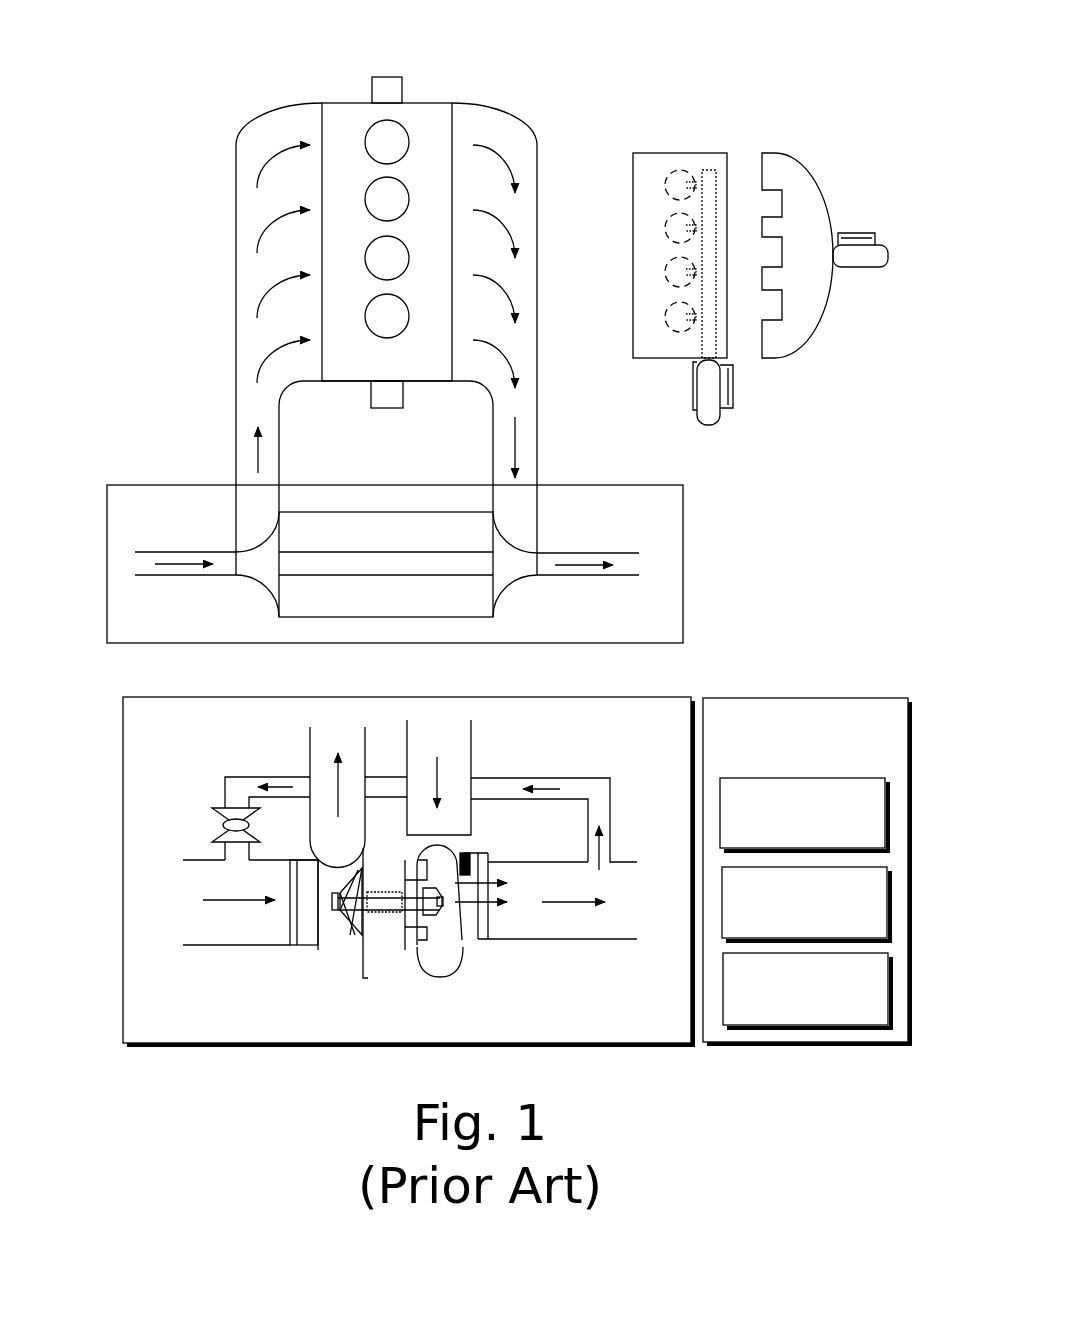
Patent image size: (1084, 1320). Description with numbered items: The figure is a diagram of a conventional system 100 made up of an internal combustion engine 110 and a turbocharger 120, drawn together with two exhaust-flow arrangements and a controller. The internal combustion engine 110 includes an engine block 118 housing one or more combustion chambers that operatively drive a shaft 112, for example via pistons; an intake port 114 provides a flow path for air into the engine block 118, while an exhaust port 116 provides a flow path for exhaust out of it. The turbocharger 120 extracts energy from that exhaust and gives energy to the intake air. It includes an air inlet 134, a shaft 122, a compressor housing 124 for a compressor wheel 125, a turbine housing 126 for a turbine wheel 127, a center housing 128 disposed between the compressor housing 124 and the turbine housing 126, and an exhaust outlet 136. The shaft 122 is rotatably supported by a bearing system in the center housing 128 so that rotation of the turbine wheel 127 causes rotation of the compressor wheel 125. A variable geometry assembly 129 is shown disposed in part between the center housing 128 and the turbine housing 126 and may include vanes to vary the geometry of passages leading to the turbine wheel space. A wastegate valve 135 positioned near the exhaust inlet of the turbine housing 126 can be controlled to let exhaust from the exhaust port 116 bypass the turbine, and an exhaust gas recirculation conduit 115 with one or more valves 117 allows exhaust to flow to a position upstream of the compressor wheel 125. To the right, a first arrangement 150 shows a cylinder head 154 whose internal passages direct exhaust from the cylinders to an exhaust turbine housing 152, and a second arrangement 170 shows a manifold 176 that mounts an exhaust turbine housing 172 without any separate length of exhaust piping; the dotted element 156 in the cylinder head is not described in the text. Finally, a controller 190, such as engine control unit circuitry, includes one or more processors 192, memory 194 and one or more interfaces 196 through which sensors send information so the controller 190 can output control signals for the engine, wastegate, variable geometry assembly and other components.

The system 100 is at (523, 60).
The internal combustion engine 110 is at (355, 103).
The shaft 112 is at (388, 77).
The intake port 114 is at (253, 120).
The exhaust gas recirculation conduit 115 is at (237, 777).
The exhaust port 116 is at (518, 118).
The valve 117 is at (220, 808).
The engine block 118 is at (388, 381).
The turbocharger 120 is at (588, 485).
The shaft 122 is at (385, 576).
The compressor housing 124 is at (263, 580).
The compressor wheel 125 is at (353, 927).
The turbine housing 126 is at (512, 578).
The turbine wheel 127 is at (433, 918).
The center housing 128 is at (417, 1026).
The variable geometry assembly 129 is at (410, 945).
The air inlet 134 is at (202, 552).
The wastegate valve 135 is at (468, 855).
The exhaust outlet 136 is at (590, 553).
The arrangement 150 is at (677, 135).
The exhaust turbine housing 152 is at (695, 387).
The cylinder head 154 is at (633, 230).
The fuel rail 156 is at (708, 170).
The arrangement 170 is at (810, 147).
The exhaust turbine housing 172 is at (857, 267).
The manifold 176 is at (817, 318).
The controller 190 is at (806, 871).
The processors 192 is at (804, 814).
The memory 194 is at (806, 904).
The interfaces 196 is at (807, 990).